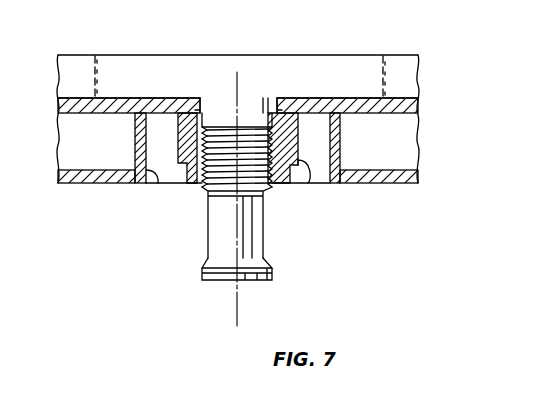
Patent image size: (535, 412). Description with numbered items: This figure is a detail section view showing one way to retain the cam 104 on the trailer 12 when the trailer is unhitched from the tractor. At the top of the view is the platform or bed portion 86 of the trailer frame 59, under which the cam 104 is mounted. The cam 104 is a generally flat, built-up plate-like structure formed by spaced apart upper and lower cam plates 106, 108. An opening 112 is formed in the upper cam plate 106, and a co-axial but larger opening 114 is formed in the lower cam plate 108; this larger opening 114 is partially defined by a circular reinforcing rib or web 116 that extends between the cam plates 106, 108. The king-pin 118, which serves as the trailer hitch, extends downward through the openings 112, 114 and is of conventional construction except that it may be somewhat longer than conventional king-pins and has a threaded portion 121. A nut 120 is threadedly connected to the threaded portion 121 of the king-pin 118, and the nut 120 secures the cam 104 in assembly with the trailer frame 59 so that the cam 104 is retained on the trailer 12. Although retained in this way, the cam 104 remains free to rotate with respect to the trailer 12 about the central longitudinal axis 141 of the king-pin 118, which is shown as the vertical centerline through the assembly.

The trailer 12 is at (288, 57).
The platform or bed portion 86 is at (196, 55).
The trailer frame 59 is at (384, 56).
The cam 104 is at (424, 152).
The upper cam plate 106 is at (418, 107).
The lower cam plate 108 is at (420, 181).
The opening 112 is at (214, 97).
The opening 114 is at (157, 184).
The circular reinforcing rib or web 116 is at (343, 146).
The nut 120 is at (300, 163).
The threaded portion 121 is at (264, 194).
The king-pin 118 is at (203, 272).
The central longitudinal axis 141 is at (238, 304).